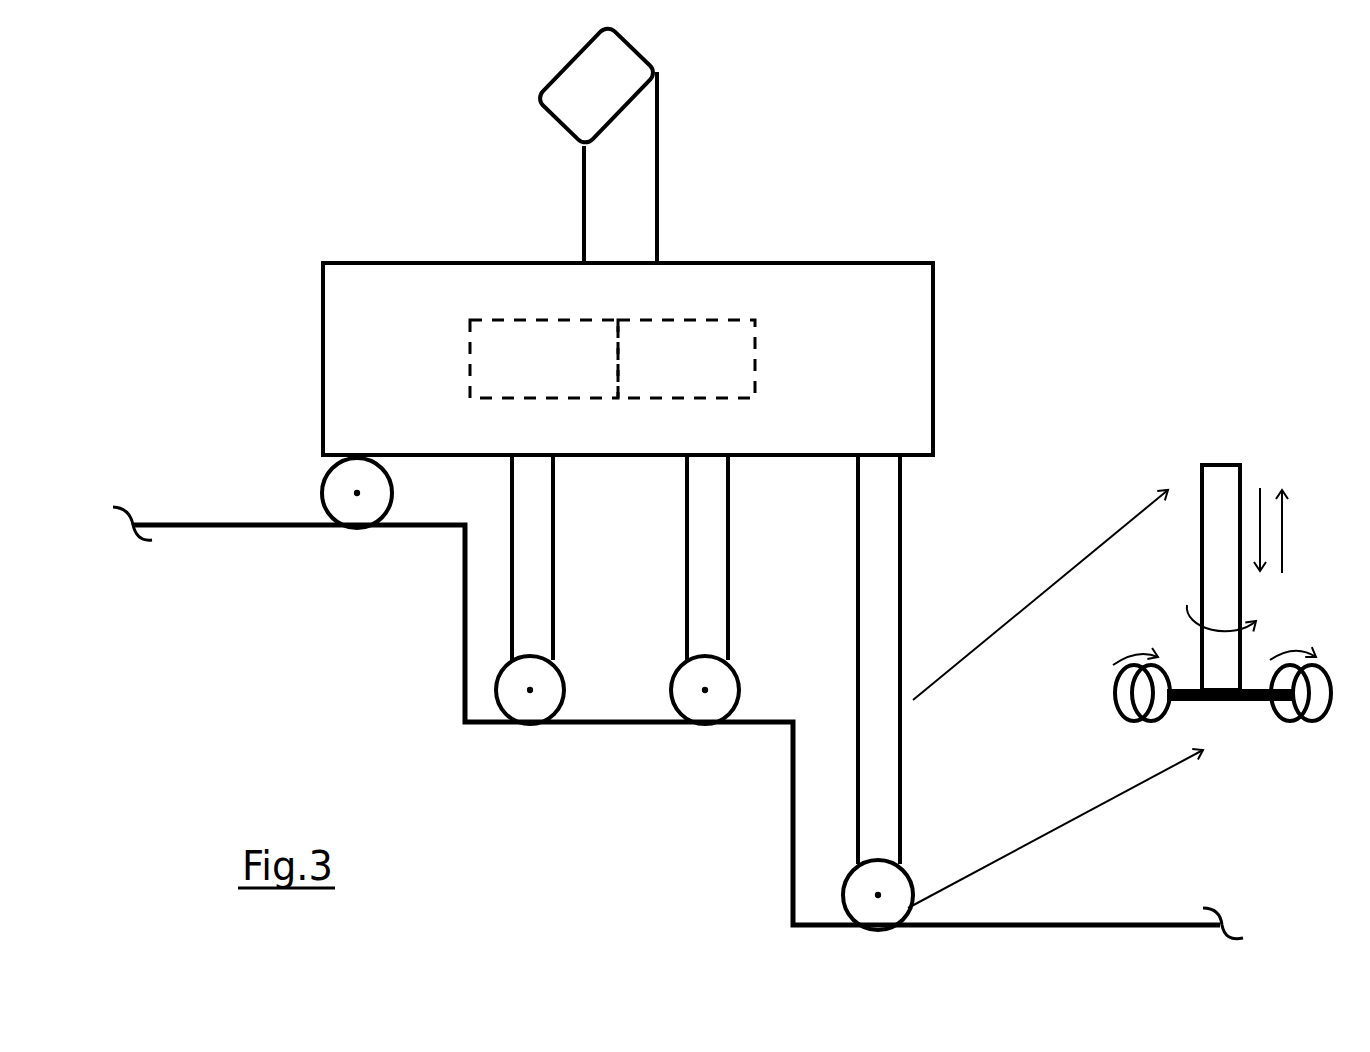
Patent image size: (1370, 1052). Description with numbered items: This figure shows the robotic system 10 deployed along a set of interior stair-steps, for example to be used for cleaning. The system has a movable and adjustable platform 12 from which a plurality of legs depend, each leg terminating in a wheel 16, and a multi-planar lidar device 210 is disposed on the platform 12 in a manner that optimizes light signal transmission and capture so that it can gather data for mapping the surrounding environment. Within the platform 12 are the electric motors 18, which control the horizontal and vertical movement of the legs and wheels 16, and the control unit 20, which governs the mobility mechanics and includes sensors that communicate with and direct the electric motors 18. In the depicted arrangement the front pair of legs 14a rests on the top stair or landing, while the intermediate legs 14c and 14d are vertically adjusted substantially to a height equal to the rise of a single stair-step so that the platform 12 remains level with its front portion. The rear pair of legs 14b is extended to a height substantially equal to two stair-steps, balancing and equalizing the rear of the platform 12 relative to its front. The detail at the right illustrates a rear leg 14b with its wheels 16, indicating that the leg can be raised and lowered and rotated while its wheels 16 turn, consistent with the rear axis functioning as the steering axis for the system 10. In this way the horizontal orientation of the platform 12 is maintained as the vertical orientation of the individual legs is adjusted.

The robotic system 10 is at (628, 250).
The platform 12 is at (628, 308).
The front pair of legs 14a is at (392, 467).
The rear pair of legs 14b is at (907, 513).
The intermediate leg 14c is at (559, 510).
The intermediate leg 14d is at (733, 510).
The wheels 16 is at (347, 510).
The electric motors 18 is at (528, 377).
The control unit 20 is at (668, 377).
The multi-planar lidar device 210 is at (518, 73).